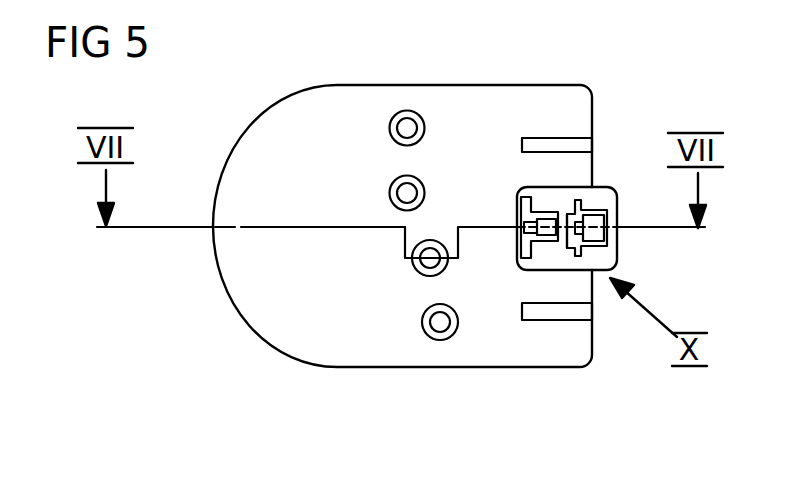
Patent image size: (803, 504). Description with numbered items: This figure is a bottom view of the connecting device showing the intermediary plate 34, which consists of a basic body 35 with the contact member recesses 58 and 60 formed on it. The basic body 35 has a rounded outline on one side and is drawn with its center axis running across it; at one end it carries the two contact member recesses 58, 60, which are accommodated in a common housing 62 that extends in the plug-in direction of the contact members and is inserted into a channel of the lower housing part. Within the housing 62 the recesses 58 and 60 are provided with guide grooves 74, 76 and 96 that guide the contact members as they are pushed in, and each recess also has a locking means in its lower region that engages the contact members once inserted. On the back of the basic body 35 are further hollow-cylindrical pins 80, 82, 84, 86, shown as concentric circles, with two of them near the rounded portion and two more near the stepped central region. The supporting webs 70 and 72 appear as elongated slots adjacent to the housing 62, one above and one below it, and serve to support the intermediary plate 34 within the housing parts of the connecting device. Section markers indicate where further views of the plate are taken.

The intermediary plate 34 is at (240, 328).
The basic body 35 is at (236, 269).
The contact member recess 58 is at (566, 232).
The contact member recess 60 is at (604, 196).
The housing 62 is at (618, 188).
The supporting web 70 is at (538, 140).
The supporting web 72 is at (550, 318).
The guide groove 74 is at (595, 213).
The guide groove 76 is at (527, 258).
The hollow-cylindrical pin 80 is at (428, 337).
The hollow-cylindrical pin 82 is at (416, 268).
The hollow-cylindrical pin 84 is at (391, 193).
The hollow-cylindrical pin 86 is at (398, 116).
The guide groove 96 is at (527, 187).